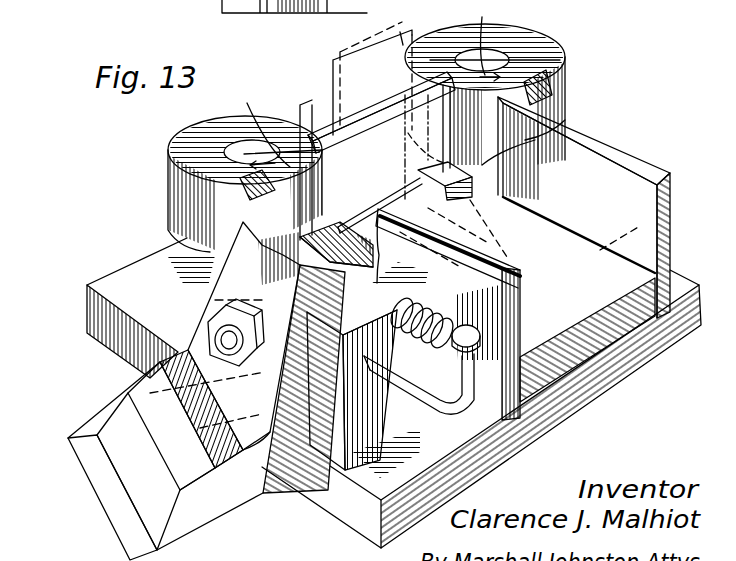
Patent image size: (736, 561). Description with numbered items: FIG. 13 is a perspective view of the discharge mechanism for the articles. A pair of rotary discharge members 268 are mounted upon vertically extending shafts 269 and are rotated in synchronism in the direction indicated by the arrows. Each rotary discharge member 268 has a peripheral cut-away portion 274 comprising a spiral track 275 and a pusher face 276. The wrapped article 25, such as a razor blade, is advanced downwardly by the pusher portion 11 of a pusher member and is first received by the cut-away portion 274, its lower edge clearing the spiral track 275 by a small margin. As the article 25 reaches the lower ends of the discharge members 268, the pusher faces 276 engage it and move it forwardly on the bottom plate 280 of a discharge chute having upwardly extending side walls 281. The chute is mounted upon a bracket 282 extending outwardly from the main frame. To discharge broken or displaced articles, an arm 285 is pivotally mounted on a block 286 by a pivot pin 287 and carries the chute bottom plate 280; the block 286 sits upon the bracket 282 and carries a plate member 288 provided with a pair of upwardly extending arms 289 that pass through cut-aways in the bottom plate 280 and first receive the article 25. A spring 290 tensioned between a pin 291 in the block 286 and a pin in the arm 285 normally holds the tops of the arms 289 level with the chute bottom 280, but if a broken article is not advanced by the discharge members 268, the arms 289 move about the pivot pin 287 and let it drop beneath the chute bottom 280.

The pusher portion 11 is at (400, 32).
The article 25 is at (372, 120).
The rotary discharge members 268 is at (266, 112).
The shafts 269 is at (172, 151).
The peripheral cut-away portion 274 is at (354, 84).
The spiral track 275 is at (248, 200).
The pusher face 276 is at (308, 130).
The bottom plate 280 is at (578, 323).
The side walls 281 is at (648, 175).
The bracket 282 is at (100, 288).
The arm 285 is at (220, 302).
The block 286 is at (300, 470).
The pivot pin 287 is at (225, 340).
The plate member 288 is at (112, 503).
The arms 289 is at (338, 225).
The spring 290 is at (403, 342).
The pin 291 is at (481, 409).